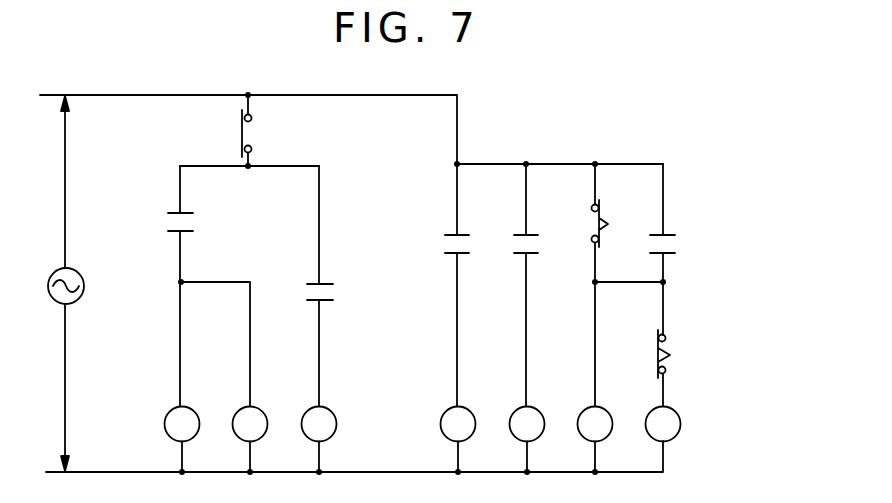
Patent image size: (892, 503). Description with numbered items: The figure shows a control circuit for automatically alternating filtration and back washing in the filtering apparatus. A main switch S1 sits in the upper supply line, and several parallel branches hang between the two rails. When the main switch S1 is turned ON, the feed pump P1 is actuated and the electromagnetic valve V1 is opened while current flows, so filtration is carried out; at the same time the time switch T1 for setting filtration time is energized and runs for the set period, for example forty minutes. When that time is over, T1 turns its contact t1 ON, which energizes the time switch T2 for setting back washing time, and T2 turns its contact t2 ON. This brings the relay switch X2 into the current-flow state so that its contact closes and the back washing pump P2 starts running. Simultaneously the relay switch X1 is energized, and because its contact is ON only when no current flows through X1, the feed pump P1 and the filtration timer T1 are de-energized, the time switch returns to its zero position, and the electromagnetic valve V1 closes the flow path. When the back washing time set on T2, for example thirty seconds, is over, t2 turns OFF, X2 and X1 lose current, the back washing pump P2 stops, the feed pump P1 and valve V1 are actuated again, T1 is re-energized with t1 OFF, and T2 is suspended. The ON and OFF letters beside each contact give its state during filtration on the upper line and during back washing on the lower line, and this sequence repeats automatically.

The main switch S1 is at (252, 134).
The relay switch X1 is at (190, 226).
The relay switch X2 is at (330, 293).
The contact of time switch T1 t1 is at (602, 212).
The contact of time switch T2 t2 is at (671, 352).
The feed pump P1 is at (182, 440).
The electromagnetic valve V1 is at (250, 440).
The back washing pump P2 is at (319, 440).
The time switch for setting filtration time T1 is at (458, 440).
The time switch for setting back washing time T2 is at (595, 440).